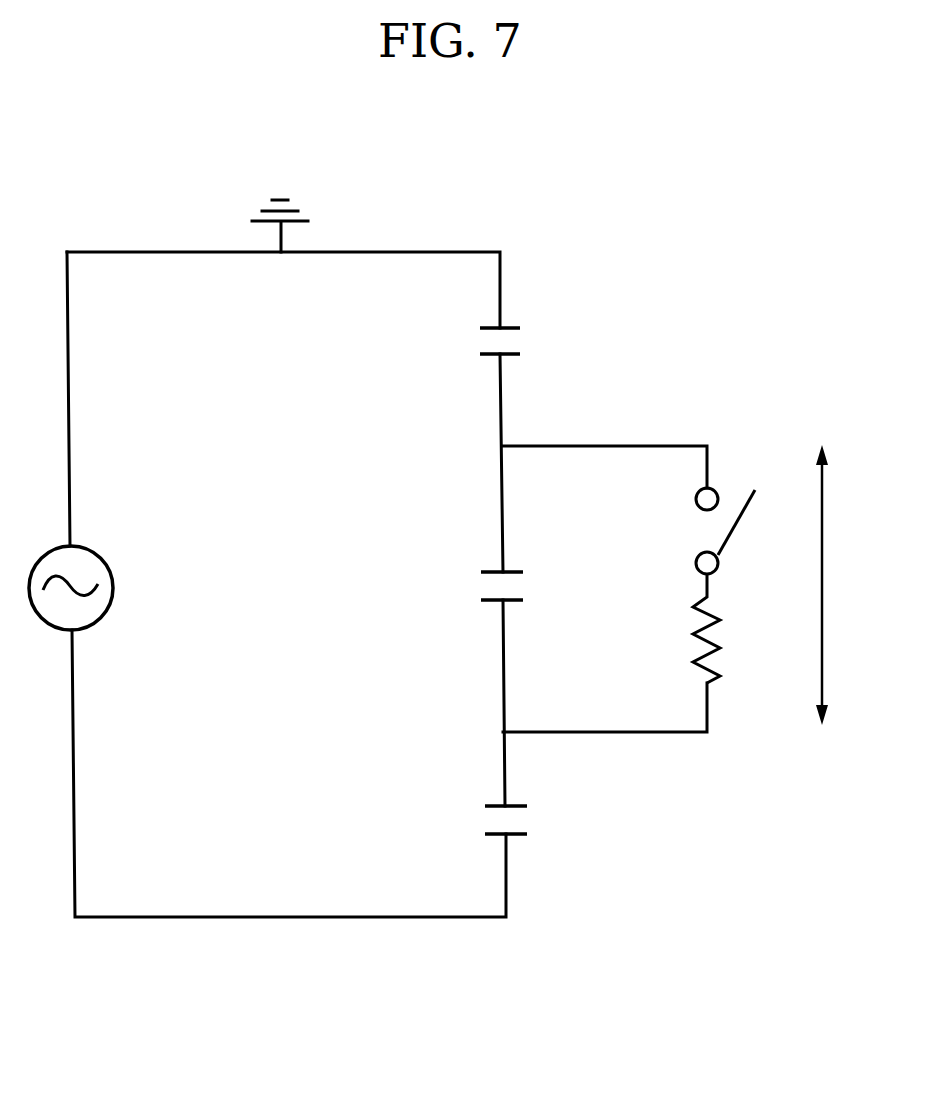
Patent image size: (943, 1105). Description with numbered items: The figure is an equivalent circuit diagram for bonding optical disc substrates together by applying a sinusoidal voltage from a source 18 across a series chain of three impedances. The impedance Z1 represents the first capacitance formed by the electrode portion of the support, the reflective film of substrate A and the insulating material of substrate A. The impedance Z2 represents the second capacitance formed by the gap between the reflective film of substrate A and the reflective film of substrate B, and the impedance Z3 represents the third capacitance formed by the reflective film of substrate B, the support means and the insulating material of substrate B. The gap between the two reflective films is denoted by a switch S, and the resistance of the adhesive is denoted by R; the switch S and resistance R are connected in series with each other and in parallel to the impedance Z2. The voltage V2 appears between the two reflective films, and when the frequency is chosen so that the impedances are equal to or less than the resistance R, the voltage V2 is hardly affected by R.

The AC power source 18 is at (113, 590).
The impedance Z3 is at (480, 342).
The impedance Z2 is at (483, 589).
The impedance Z1 is at (483, 817).
The switch S is at (736, 533).
The resistance of the adhesive R is at (697, 646).
The voltage V2 is at (839, 585).